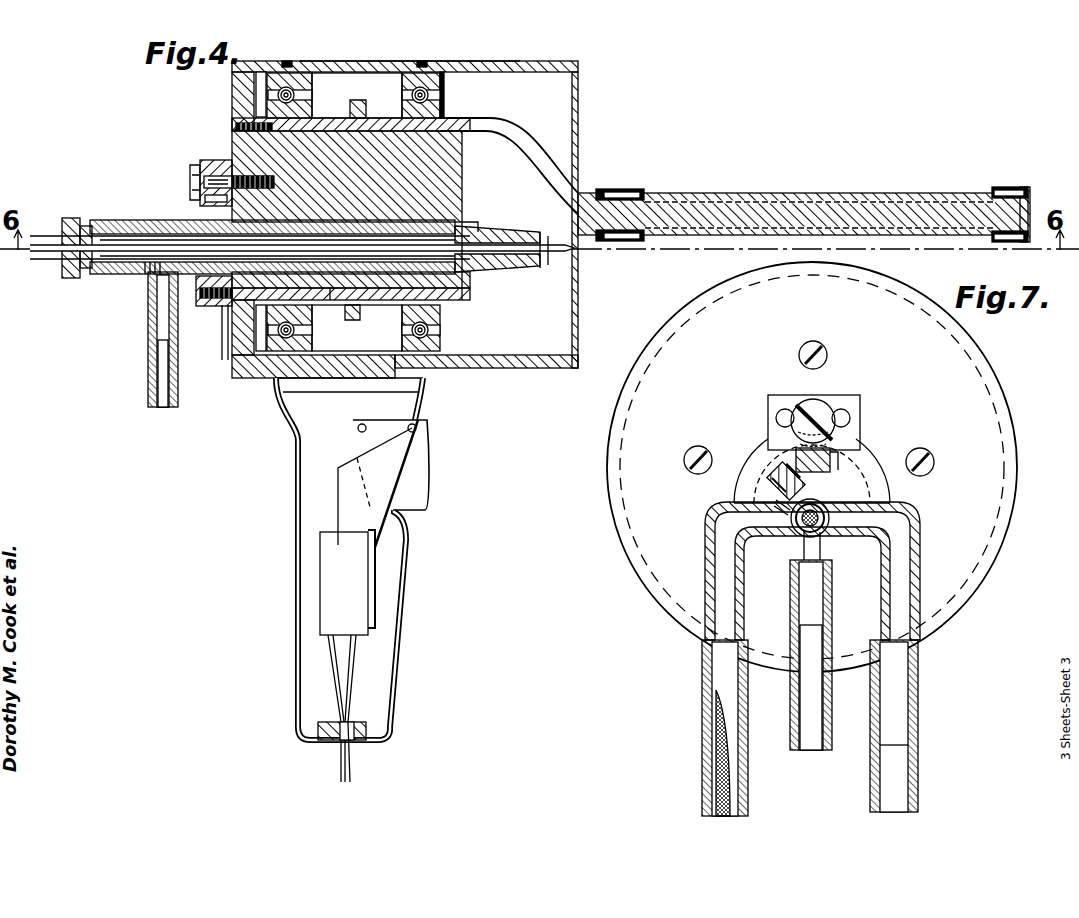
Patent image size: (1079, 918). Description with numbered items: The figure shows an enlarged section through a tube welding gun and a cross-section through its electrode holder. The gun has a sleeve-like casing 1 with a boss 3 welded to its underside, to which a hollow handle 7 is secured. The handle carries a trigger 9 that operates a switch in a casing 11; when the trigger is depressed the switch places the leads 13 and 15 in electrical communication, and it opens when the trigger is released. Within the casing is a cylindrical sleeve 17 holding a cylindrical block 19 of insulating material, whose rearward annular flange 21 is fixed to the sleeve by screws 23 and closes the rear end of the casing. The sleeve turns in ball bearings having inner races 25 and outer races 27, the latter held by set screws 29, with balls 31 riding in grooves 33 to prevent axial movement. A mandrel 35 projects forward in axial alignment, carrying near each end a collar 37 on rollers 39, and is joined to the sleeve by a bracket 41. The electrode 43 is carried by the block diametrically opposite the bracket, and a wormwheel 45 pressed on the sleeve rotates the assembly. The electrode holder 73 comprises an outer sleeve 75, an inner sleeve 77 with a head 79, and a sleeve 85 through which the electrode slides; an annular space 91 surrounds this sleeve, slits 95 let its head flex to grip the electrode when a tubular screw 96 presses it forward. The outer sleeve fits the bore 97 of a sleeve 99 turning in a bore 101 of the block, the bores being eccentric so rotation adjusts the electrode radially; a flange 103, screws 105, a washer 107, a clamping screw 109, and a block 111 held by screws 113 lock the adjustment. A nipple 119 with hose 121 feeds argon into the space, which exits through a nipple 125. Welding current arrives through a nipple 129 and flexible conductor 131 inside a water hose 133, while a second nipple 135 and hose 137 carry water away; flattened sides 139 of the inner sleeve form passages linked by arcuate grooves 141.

In FIG. 4, the sleeve-like casing 1 is at (350, 62).
In FIG. 4, the boss 3 is at (270, 380).
In FIG. 4, the hollow handle 7 is at (295, 605).
In FIG. 4, the trigger 9 is at (420, 468).
In FIG. 4, the switch casing 11 is at (352, 590).
In FIG. 4, the lead 13 is at (332, 718).
In FIG. 4, the lead 15 is at (352, 694).
In FIG. 4, the cylindrical sleeve 17 is at (446, 302).
In FIG. 4, the cylindrical block of insulating material 19 is at (463, 162).
In FIG. 7, the cylindrical block of insulating material 19 is at (782, 470).
In FIG. 4, the annular flange 21 is at (232, 82).
In FIG. 7, the annular flange 21 is at (988, 440).
In FIG. 4, the screws 23 is at (240, 126).
In FIG. 7, the screws 23 is at (818, 345).
In FIG. 4, the inner races 25 is at (444, 113).
In FIG. 4, the outer races 27 is at (444, 78).
In FIG. 4, the set screws 29 is at (422, 61).
In FIG. 4, the balls 31 is at (442, 100).
In FIG. 4, the grooves 33 is at (402, 84).
In FIG. 4, the mandrel 35 is at (750, 198).
In FIG. 4, the collar 37 is at (615, 190).
In FIG. 4, the rollers 39 is at (640, 194).
In FIG. 4, the bracket 41 is at (532, 158).
In FIG. 4, the electrode 43 is at (572, 262).
In FIG. 4, the wormwheel 45 is at (360, 322).
In FIG. 4, the electrode holder 73 is at (110, 215).
In FIG. 7, the electrode holder 73 is at (832, 540).
In FIG. 4, the exterior elongated sleeve 75 is at (110, 276).
In FIG. 7, the exterior elongated sleeve 75 is at (854, 478).
In FIG. 4, the second elongated sleeve 77 is at (180, 220).
In FIG. 7, the second elongated sleeve 77 is at (832, 500).
In FIG. 4, the head 79 is at (480, 280).
In FIG. 4, the sleeve 85 is at (154, 220).
In FIG. 4, the annular space 91 is at (146, 275).
In FIG. 4, the slits 95 is at (470, 232).
In FIG. 4, the tubular screw 96 is at (68, 218).
In FIG. 7, the bore 97 is at (778, 500).
In FIG. 4, the sleeve 99 is at (321, 212).
In FIG. 7, the sleeve 99 is at (792, 466).
In FIG. 7, the bore 101 is at (776, 480).
In FIG. 4, the annular flange 103 is at (224, 340).
In FIG. 4, the screws 105 is at (196, 300).
In FIG. 7, the screws 105 is at (830, 450).
In FIG. 4, the washer 107 is at (210, 306).
In FIG. 4, the clamping screw 109 is at (195, 165).
In FIG. 7, the clamping screw 109 is at (816, 408).
In FIG. 4, the block 111 is at (212, 160).
In FIG. 7, the block 111 is at (856, 396).
In FIG. 7, the screws 113 is at (785, 410).
In FIG. 4, the nipple 119 is at (156, 340).
In FIG. 7, the nipple 119 is at (824, 640).
In FIG. 4, the flexible hose 121 is at (156, 396).
In FIG. 7, the flexible hose 121 is at (795, 732).
In FIG. 4, the nipple 125 is at (542, 282).
In FIG. 7, the nipple 129 is at (705, 552).
In FIG. 7, the flexible conductor 131 is at (716, 768).
In FIG. 7, the flexible hose 133 is at (704, 726).
In FIG. 7, the second nipple 135 is at (920, 585).
In FIG. 7, the flexible hose 137 is at (916, 770).
In FIG. 7, the flattened sides 139 is at (800, 532).
In FIG. 4, the arcuate grooves 141 is at (480, 226).
In FIG. 7, the arcuate grooves 141 is at (840, 456).